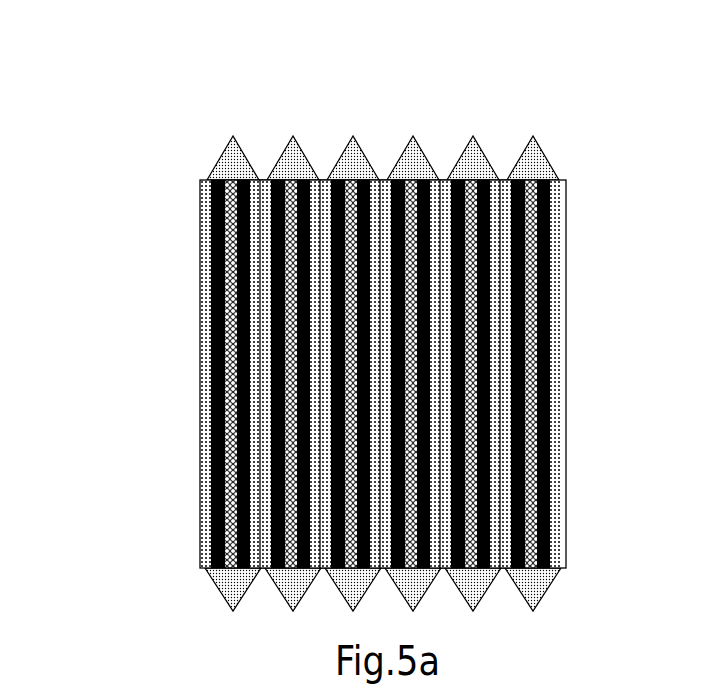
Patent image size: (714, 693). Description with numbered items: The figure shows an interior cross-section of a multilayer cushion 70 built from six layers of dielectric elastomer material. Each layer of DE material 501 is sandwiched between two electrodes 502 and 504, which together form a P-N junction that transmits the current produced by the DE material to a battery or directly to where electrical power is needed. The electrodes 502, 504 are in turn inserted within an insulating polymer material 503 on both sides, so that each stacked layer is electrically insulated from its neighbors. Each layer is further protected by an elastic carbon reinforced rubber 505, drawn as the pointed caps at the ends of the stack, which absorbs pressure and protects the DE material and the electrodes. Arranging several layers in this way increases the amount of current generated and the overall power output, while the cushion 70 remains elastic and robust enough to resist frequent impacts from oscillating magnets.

The multilayer cushion 70 is at (603, 121).
The DE material 501 is at (198, 346).
The electrode 502 is at (210, 383).
The polymer material 503 is at (203, 257).
The electrode 504 is at (212, 313).
The elastic carbon reinforced rubber 505 is at (555, 543).